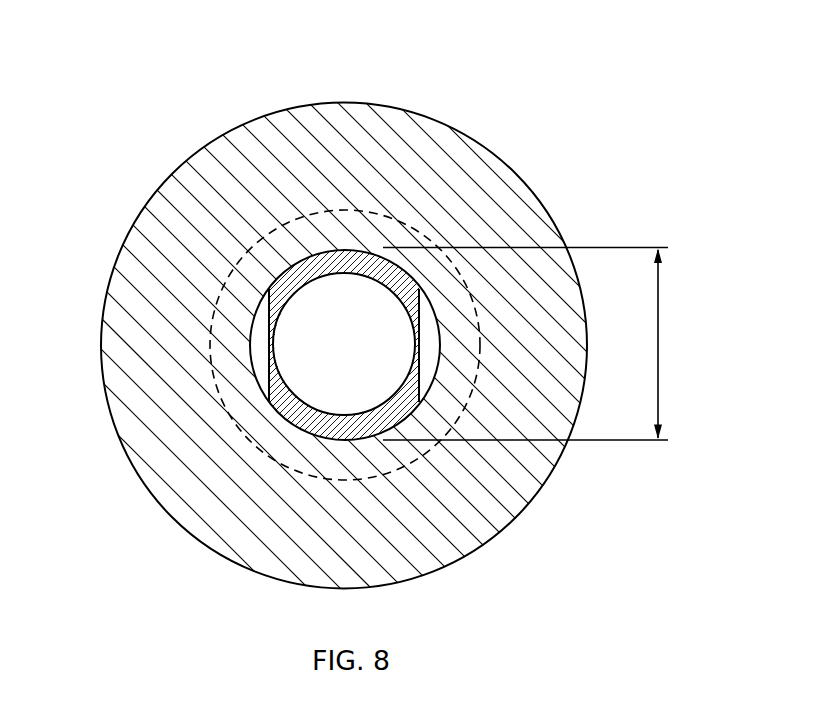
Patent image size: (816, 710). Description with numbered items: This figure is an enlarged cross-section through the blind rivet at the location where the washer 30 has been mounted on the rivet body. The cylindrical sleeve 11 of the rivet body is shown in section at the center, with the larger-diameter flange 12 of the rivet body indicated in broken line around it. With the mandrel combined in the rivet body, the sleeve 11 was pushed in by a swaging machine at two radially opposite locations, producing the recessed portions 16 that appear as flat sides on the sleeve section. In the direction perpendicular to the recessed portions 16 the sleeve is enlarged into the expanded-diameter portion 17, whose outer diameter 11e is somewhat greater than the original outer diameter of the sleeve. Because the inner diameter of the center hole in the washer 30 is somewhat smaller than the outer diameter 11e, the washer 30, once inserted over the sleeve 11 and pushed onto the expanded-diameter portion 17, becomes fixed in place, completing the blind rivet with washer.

The washer 30 is at (342, 103).
The sleeve 11 is at (324, 253).
The expanded-diameter portion 17 is at (343, 247).
The recessed portions 16 is at (269, 332).
The flange 12 is at (417, 221).
The outer diameter of expanded-diameter portion 11e is at (525, 344).